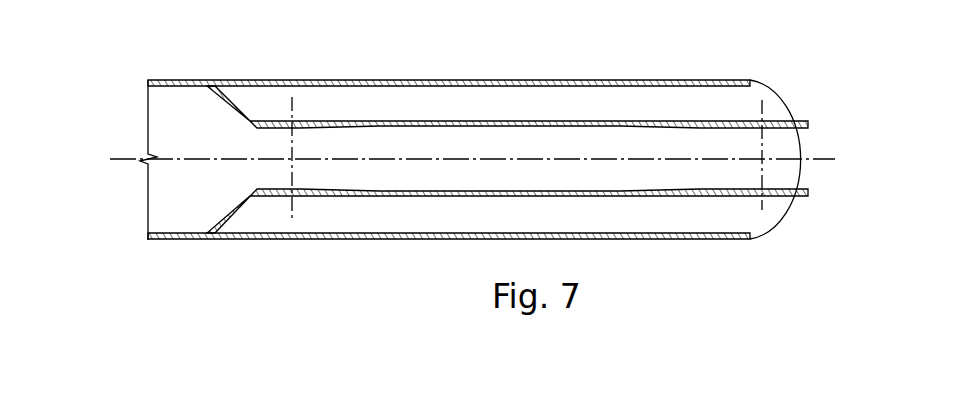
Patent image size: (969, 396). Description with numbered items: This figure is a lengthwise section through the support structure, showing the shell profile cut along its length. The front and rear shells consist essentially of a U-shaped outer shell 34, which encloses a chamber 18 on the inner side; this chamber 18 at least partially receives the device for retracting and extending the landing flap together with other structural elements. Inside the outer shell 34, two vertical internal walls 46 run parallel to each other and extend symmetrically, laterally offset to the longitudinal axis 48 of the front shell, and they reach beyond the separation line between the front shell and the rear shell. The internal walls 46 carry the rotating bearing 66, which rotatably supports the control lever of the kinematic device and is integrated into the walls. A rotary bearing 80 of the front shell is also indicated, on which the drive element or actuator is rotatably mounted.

The chamber 18 is at (208, 193).
The U-shaped outer shell 34 is at (440, 82).
The internal walls 46 is at (620, 122).
The longitudinal axis 48 is at (130, 158).
The rotating bearing 66 is at (760, 110).
The rotary bearing 80 is at (293, 110).